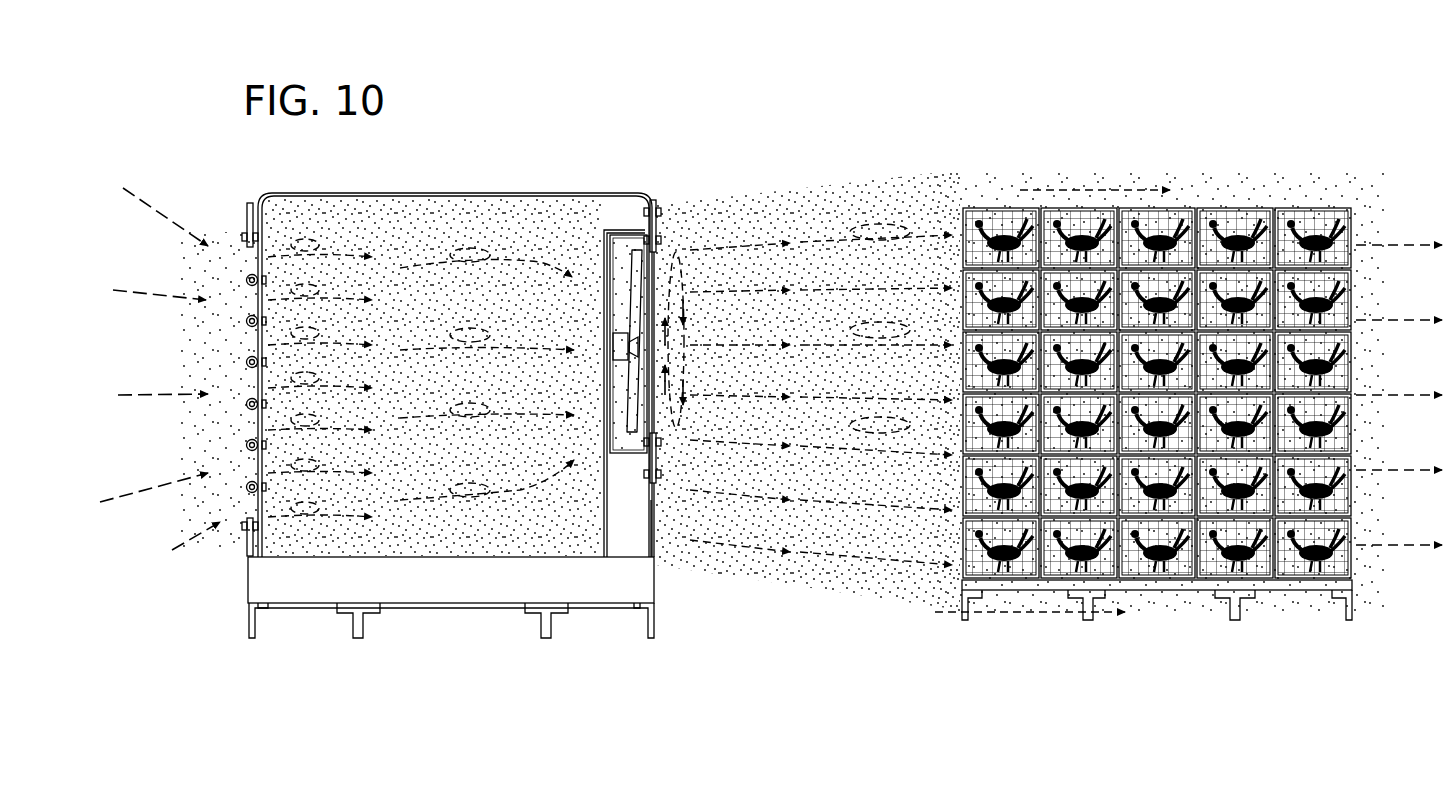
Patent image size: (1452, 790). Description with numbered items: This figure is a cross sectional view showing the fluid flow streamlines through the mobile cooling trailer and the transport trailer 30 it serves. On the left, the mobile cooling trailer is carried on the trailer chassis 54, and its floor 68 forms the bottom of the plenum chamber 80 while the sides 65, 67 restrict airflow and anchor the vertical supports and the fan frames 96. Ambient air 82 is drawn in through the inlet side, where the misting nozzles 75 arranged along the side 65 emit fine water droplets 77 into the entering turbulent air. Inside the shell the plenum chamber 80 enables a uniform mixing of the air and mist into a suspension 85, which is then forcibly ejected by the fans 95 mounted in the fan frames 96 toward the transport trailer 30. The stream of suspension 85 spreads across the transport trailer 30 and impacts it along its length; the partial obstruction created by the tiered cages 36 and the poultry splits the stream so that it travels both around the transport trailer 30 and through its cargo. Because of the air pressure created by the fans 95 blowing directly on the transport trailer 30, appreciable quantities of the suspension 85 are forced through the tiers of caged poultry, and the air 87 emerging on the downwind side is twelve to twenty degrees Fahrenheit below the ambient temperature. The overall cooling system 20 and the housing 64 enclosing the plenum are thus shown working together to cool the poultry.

The air treatment apparatus 20 is at (690, 118).
The transport trailer 30 is at (1100, 606).
The tiered cages 36 is at (1192, 206).
The trailer chassis 54 is at (552, 624).
The housing 64 is at (372, 192).
The side 65 is at (245, 540).
The side 67 is at (657, 545).
The floor 68 is at (433, 602).
The misting nozzles 75 is at (246, 277).
The fine water droplets 77 is at (233, 280).
The plenum chamber 80 is at (450, 221).
The ambient air 82 is at (158, 207).
The air-mist suspension 85 is at (530, 220).
The emerging air 87 is at (1410, 243).
The fans 95 is at (640, 330).
The fan frames 96 is at (624, 226).